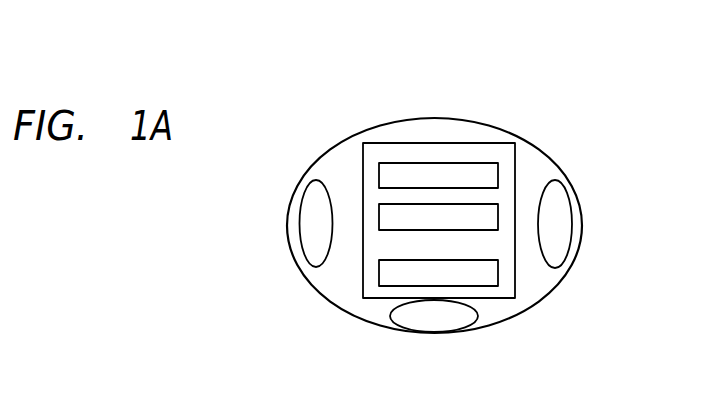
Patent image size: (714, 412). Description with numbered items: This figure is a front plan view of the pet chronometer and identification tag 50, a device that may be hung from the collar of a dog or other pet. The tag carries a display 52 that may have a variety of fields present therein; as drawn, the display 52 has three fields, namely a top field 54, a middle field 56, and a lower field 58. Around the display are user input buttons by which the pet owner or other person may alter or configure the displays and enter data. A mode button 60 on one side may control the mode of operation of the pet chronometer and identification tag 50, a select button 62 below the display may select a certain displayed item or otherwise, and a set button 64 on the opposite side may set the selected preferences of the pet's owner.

The pet chronometer and identification tag 50 is at (528, 104).
The display 52 is at (511, 320).
The top field 54 is at (437, 163).
The middle field 56 is at (379, 213).
The lower field 58 is at (379, 272).
The mode button 60 is at (301, 227).
The select button 62 is at (409, 331).
The set button 64 is at (571, 222).